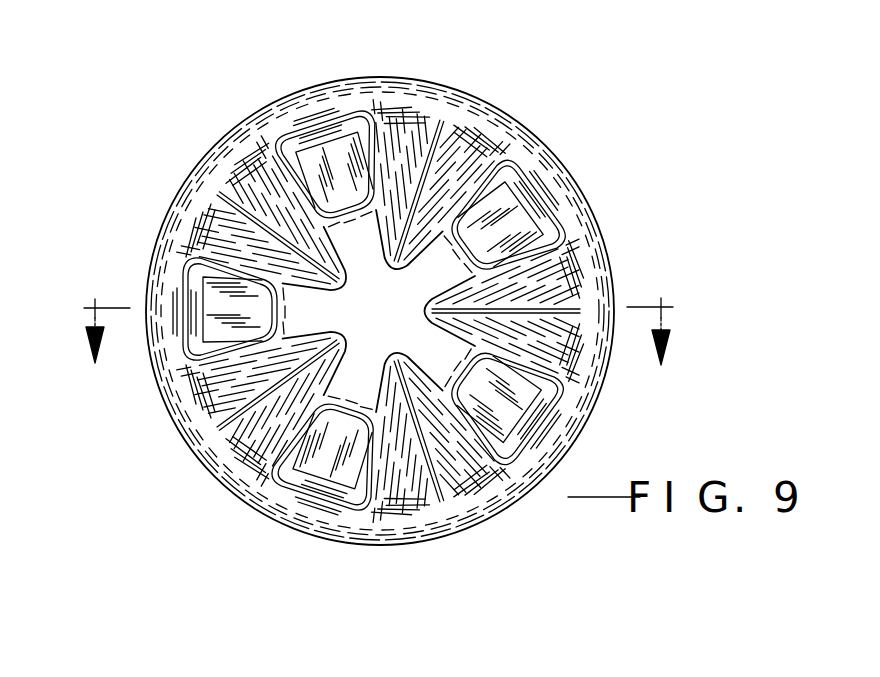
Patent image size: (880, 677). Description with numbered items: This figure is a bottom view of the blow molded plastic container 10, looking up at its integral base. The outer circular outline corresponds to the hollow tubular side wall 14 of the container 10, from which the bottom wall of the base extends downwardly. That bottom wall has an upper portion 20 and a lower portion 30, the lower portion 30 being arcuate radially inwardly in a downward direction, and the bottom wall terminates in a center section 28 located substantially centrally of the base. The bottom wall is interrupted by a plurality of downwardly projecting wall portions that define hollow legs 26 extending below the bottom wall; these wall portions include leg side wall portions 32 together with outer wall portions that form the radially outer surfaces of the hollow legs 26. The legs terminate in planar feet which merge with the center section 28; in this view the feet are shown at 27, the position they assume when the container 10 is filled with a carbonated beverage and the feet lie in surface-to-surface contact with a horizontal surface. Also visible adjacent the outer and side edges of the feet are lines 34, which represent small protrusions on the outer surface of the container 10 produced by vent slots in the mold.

The container 10 is at (379, 350).
The hollow tubular side wall 14 is at (398, 71).
The upper portion 20 is at (573, 222).
The hollow legs 26 is at (283, 142).
The feet 27 is at (317, 160).
The center section 28 is at (401, 327).
The lower portion 30 is at (462, 155).
The leg side wall portions 32 is at (403, 133).
The lines 34 is at (345, 140).